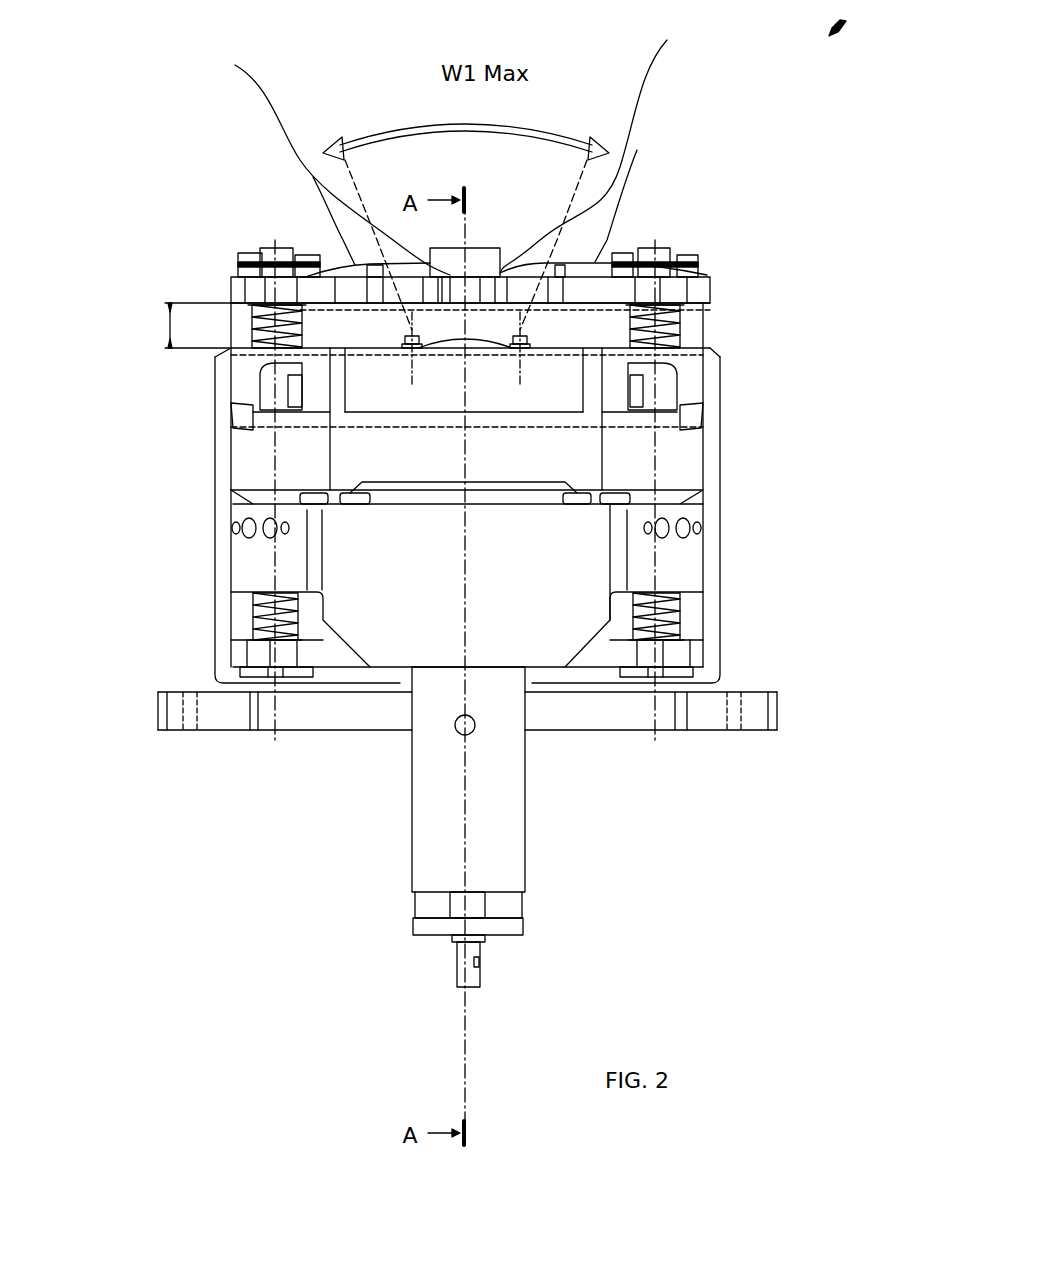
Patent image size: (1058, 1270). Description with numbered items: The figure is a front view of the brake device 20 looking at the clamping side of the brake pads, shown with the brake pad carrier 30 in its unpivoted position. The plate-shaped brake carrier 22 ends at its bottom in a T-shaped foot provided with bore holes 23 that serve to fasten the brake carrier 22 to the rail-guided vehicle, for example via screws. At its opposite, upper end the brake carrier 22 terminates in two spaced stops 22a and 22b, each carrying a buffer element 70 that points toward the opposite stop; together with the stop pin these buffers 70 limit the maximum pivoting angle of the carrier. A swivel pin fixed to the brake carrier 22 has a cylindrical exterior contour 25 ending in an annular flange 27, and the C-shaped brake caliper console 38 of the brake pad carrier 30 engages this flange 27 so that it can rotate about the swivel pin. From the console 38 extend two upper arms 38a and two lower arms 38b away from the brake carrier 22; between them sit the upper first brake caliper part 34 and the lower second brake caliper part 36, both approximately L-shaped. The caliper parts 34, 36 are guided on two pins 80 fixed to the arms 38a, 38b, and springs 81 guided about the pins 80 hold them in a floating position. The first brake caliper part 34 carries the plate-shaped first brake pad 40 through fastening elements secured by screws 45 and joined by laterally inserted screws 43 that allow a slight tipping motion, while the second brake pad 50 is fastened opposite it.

The brake device 20 is at (845, 25).
The brake carrier 22 is at (623, 723).
The stop 22a is at (597, 290).
The stop 22b is at (337, 265).
The bore holes 23 is at (192, 712).
The cylindrical exterior contour 25 is at (184, 325).
The flange 27 is at (450, 270).
The brake pad carrier 30 is at (106, 463).
The first brake caliper part 34 is at (345, 357).
The second brake caliper part 36 is at (350, 558).
The brake caliper console 38 is at (590, 280).
The upper arms 38a is at (235, 285).
The lower arms 38b is at (257, 650).
The first brake pad 40 is at (700, 440).
The screws 43 is at (290, 380).
The screws 45 is at (405, 333).
The second brake pad 50 is at (617, 487).
The buffer element 70 is at (451, 179).
The pins 80 is at (260, 310).
The springs 81 is at (252, 332).